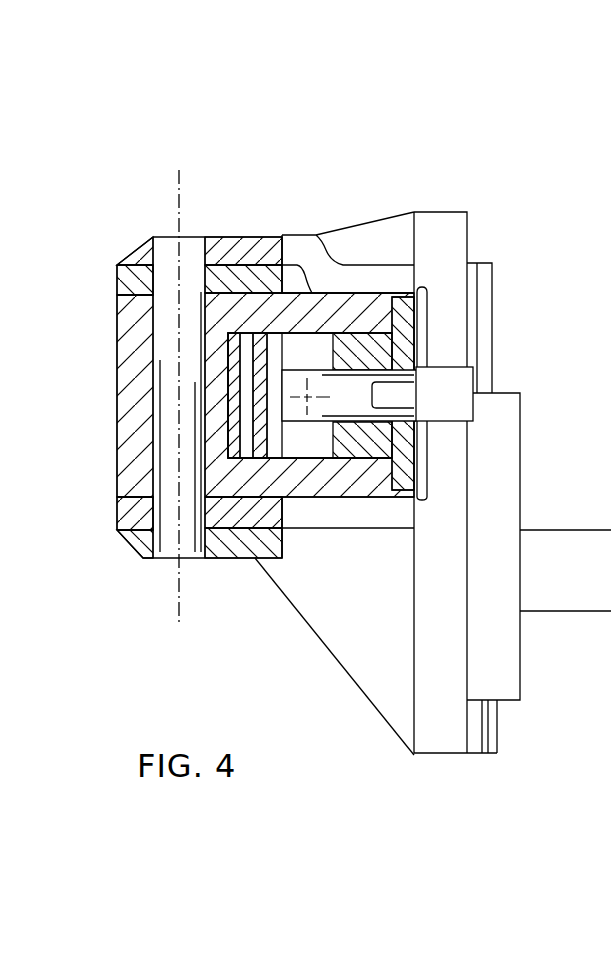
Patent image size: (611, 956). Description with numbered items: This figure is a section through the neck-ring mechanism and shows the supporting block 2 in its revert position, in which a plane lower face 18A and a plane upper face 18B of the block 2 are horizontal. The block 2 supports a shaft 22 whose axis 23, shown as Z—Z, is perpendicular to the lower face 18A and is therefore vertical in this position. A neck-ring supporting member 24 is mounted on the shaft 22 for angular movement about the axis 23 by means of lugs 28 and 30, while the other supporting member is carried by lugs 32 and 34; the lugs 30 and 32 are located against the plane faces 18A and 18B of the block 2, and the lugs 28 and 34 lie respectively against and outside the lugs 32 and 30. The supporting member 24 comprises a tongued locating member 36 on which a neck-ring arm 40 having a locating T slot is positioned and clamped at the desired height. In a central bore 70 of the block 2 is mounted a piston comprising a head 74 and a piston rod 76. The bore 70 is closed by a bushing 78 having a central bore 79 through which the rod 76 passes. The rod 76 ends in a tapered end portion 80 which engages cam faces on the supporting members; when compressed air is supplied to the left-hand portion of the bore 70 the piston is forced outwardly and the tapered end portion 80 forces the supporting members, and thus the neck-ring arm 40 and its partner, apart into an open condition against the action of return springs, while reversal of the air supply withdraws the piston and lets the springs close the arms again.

The block 2 is at (130, 383).
The plane lower face 18A is at (382, 500).
The plane upper face 18B is at (352, 293).
The shaft 22 is at (193, 552).
The axis 23 is at (181, 203).
The neck-ring supporting member 24 is at (390, 275).
The lug 28 is at (141, 257).
The lug 30 is at (127, 508).
The lug 32 is at (133, 283).
The lug 34 is at (145, 543).
The tongued locating member 36 is at (471, 278).
The neck-ring arm 40 is at (590, 586).
The central bore 70 is at (313, 447).
The head 74 is at (259, 343).
The piston rod 76 is at (347, 388).
The bushing 78 is at (401, 444).
The central bore 79 is at (402, 373).
The tapered end portion 80 is at (453, 382).